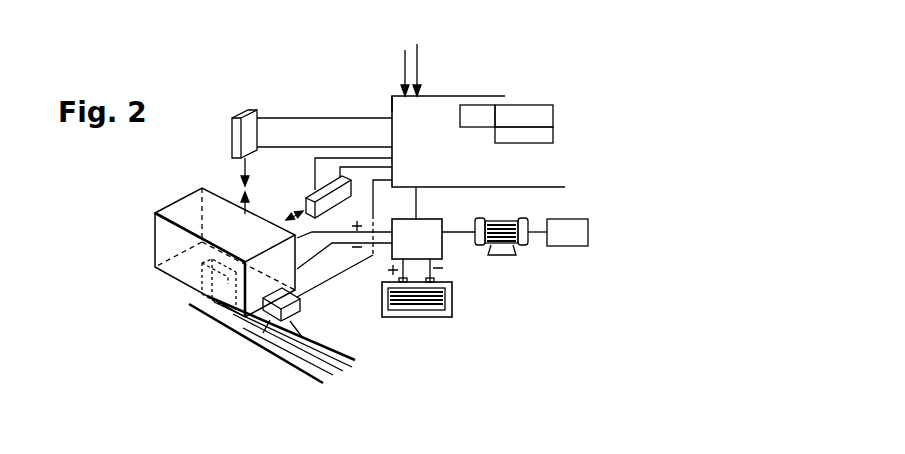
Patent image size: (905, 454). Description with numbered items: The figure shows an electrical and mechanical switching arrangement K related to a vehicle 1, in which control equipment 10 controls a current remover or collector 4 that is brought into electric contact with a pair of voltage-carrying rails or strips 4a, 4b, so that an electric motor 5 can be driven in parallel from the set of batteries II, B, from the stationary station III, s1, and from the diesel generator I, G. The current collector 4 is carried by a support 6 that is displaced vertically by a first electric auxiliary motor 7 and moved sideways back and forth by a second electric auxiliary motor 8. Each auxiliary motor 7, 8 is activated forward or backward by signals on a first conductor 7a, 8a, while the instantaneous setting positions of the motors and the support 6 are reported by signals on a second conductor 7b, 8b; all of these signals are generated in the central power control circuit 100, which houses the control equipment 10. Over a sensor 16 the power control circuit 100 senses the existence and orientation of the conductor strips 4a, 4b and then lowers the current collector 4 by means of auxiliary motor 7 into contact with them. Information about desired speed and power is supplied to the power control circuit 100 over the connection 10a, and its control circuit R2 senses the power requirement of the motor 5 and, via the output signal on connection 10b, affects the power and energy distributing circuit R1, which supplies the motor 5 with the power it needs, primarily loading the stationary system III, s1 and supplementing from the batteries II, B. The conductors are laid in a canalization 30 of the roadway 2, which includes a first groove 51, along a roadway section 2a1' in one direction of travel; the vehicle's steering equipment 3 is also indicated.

The vehicle 1 is at (258, 104).
The power control circuit 100 is at (463, 96).
The steering equipment 3 is at (483, 123).
The control circuit R2 is at (535, 105).
The control equipment 10 is at (547, 138).
The diesel generator G is at (403, 60).
The first vehicle related power source I is at (420, 53).
The connection 10a is at (383, 90).
The first electric auxiliary motor 7 is at (232, 130).
The first conductor 7a is at (333, 147).
The second conductor 7b is at (370, 118).
The first conductor 8a is at (315, 175).
The second conductor 8b is at (372, 170).
The second electric auxiliary motor 8 is at (306, 201).
The electrical/mechanical switching arrangement K is at (222, 220).
The support 6 is at (217, 226).
The current remover or collector 4 is at (200, 298).
The connection 10b is at (416, 206).
The power and energy distributing circuit R1 is at (443, 250).
The electric motor 5 is at (497, 220).
The set of batteries B is at (452, 302).
The second vehicle related power source II is at (418, 338).
The sensor 16 is at (301, 303).
The stationary station s1 is at (302, 346).
The second rail 4b is at (323, 357).
The first rail 4a is at (252, 336).
The canalization 30 is at (287, 354).
The first roadway section related groove 51 is at (295, 367).
The stretch of a roadway 2 is at (195, 309).
The stationary station III is at (207, 356).
The roadway section 2a1' is at (379, 385).